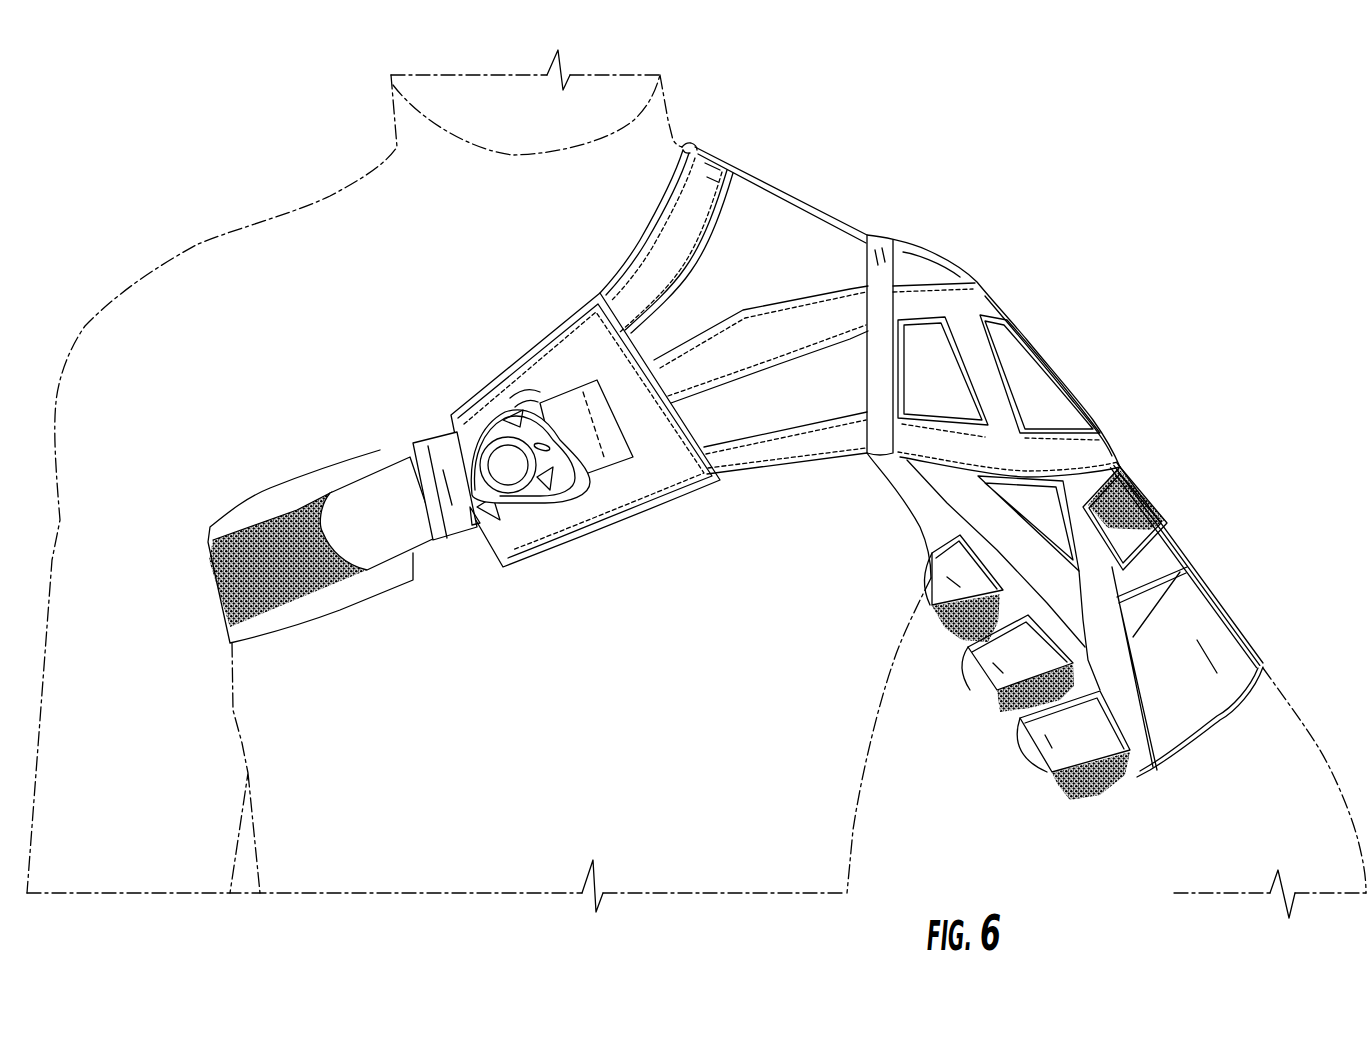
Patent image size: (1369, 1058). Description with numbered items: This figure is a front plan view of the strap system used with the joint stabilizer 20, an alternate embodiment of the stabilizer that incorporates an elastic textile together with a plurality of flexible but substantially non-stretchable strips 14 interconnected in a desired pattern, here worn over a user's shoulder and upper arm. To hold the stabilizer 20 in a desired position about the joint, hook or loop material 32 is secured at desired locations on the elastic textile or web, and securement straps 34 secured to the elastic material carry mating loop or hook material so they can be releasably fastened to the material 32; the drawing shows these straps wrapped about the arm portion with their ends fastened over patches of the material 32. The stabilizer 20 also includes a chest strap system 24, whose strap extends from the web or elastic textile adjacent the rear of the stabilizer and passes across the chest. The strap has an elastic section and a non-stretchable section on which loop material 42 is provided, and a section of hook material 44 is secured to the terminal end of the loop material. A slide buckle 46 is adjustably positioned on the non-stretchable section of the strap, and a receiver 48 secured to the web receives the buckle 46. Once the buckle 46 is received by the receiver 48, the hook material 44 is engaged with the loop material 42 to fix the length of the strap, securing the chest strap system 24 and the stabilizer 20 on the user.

The non-stretchable strips 14 is at (983, 360).
The joint stabilizer 20 is at (985, 217).
The chest strap system 24 is at (315, 467).
The hook or loop material 32 is at (1088, 775).
The securement straps 34 is at (990, 667).
The loop material 42 is at (272, 606).
The hook material 44 is at (373, 533).
The slide buckle 46 is at (468, 530).
The receiver 48 is at (537, 500).